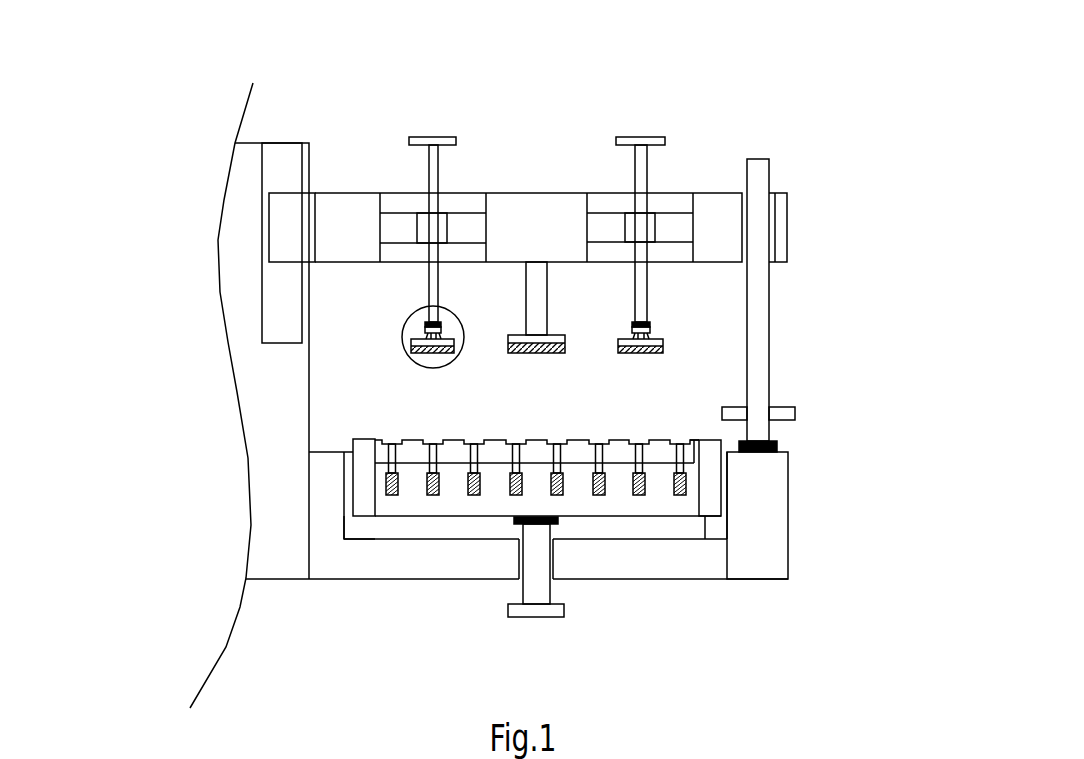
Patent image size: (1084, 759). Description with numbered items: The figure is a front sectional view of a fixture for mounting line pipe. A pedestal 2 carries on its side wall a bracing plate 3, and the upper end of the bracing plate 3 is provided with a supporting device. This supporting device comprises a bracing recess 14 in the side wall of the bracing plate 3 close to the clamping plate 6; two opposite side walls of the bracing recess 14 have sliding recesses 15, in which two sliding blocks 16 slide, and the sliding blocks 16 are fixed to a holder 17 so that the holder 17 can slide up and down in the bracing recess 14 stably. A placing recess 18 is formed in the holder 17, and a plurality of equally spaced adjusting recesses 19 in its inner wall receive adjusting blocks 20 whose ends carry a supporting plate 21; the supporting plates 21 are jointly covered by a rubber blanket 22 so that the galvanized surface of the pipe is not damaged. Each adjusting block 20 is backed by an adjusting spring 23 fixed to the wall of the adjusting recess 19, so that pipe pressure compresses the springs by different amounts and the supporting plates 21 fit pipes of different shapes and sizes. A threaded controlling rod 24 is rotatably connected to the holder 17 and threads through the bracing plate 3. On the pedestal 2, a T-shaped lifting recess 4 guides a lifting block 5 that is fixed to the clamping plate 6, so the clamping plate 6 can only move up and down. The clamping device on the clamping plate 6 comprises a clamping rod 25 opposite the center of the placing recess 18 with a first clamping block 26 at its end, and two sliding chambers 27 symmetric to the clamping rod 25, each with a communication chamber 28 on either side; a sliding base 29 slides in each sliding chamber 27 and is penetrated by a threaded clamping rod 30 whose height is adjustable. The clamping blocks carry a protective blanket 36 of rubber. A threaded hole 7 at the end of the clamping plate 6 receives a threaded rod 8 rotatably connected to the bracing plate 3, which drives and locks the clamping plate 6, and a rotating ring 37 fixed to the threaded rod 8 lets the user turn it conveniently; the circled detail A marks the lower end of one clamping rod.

The pedestal 2 is at (267, 400).
The bracing plate 3 is at (325, 471).
The lifting recess 4 is at (282, 300).
The lifting block 5 is at (287, 230).
The clamping plate 6 is at (353, 217).
The threaded hole 7 is at (773, 249).
The threaded rod 8 is at (755, 427).
The bracing recess 14 is at (411, 528).
The sliding recesses 15 is at (353, 527).
The sliding blocks 16 is at (367, 492).
The holder 17 is at (460, 502).
The placing recess 18 is at (575, 455).
The adjusting recesses 19 is at (633, 495).
The adjusting blocks 20 is at (702, 447).
The supporting plate 21 is at (697, 445).
The rubber blanket 22 is at (693, 443).
The adjusting spring 23 is at (678, 462).
The threaded controlling rod 24 is at (537, 560).
The clamping rod 25 is at (533, 297).
The first clamping block 26 is at (522, 342).
The sliding chambers 27 is at (682, 227).
The communication chamber 28 is at (600, 208).
The sliding base 29 is at (422, 227).
The threaded clamping rod 30 is at (432, 168).
The protective blanket 36 is at (665, 342).
The rotating ring 37 is at (783, 413).
The detail region A is at (402, 338).